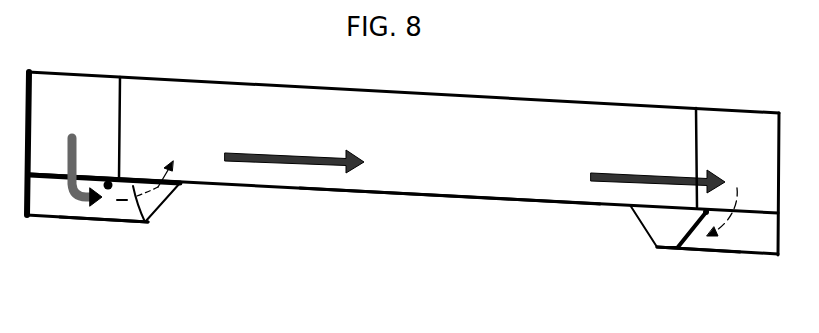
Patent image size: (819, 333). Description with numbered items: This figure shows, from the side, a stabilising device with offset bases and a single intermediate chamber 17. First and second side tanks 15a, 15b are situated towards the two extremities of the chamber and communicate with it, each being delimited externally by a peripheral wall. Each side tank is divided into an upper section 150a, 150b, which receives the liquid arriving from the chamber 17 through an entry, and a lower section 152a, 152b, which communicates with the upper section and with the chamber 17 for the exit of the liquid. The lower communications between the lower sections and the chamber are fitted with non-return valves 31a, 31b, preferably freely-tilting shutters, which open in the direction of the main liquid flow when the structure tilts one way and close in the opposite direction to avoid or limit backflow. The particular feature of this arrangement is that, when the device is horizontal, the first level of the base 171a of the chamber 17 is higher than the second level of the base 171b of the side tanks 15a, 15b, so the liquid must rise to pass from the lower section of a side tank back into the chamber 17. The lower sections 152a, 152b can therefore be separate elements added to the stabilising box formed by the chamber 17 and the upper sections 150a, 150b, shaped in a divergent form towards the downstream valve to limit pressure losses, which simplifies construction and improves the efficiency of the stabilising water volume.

The intermediate chamber 17 is at (478, 137).
The upper section of first side tank 150a is at (98, 98).
The upper section of second side tank 150b is at (739, 133).
The first side tank 15a is at (43, 190).
The second side tank 15b is at (749, 228).
The base of the chamber 171a is at (407, 193).
The base of the side tanks 171b is at (106, 222).
The lower section of first side tank 152a is at (152, 206).
The lower section of second side tank 152b is at (661, 223).
The non-return valve 31a is at (145, 222).
The non-return valve 31b is at (678, 239).